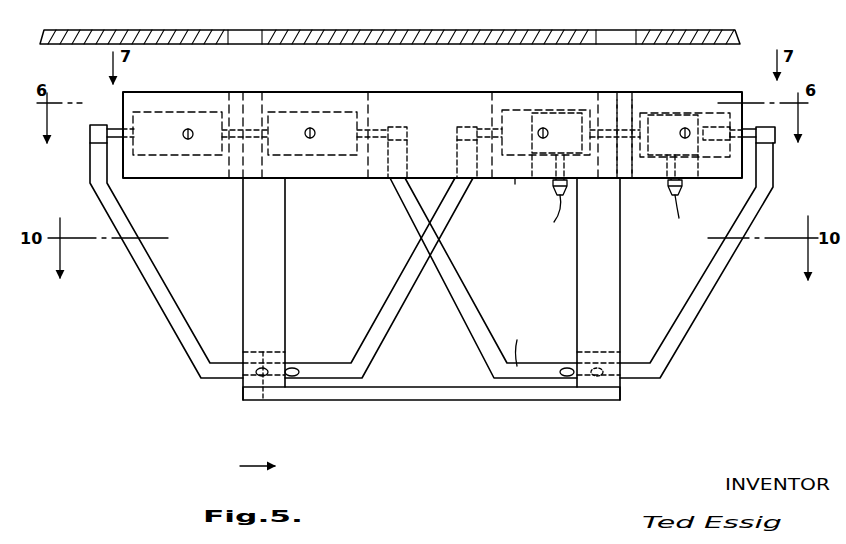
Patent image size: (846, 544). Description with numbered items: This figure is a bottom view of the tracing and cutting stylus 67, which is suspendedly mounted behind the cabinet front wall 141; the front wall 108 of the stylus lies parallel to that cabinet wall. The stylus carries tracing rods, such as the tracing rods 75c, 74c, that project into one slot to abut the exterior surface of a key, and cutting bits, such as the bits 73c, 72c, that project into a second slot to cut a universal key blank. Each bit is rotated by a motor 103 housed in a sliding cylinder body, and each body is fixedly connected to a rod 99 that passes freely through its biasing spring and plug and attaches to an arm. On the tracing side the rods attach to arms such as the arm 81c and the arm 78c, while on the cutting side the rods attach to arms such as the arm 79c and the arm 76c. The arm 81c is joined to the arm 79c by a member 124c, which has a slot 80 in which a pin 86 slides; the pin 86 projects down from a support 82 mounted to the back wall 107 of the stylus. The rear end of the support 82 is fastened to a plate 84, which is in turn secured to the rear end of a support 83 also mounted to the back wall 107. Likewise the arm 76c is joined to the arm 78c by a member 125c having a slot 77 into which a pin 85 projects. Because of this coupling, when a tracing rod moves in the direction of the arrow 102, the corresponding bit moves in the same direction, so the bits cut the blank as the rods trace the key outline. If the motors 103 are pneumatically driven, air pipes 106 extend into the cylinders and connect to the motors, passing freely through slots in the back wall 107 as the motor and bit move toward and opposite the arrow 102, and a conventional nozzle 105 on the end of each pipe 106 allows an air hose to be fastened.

The cabinet front wall 141 is at (680, 36).
The tracing and cutting stylus 67 is at (432, 92).
The rod 99 is at (122, 128).
The tracing rod 75c is at (238, 104).
The tracing rod 74c is at (258, 104).
The motor 103 is at (563, 112).
The bit 73c is at (611, 100).
The bit 72c is at (628, 98).
The front wall 108 is at (684, 92).
The air pipe 106 is at (553, 183).
The nozzle 105 is at (621, 218).
The back wall 107 is at (514, 182).
The arm 81c is at (142, 276).
The arm 76c is at (718, 274).
The arm 79c is at (392, 312).
The arm 78c is at (455, 277).
The support 82 is at (287, 250).
The support 83 is at (610, 274).
The plate 84 is at (438, 397).
The pin 86 is at (268, 398).
The slot 80 is at (293, 352).
The member 124c is at (310, 365).
The pin 85 is at (600, 360).
The slot 77 is at (568, 367).
The member 125c is at (517, 340).
The arrow 102 is at (255, 453).